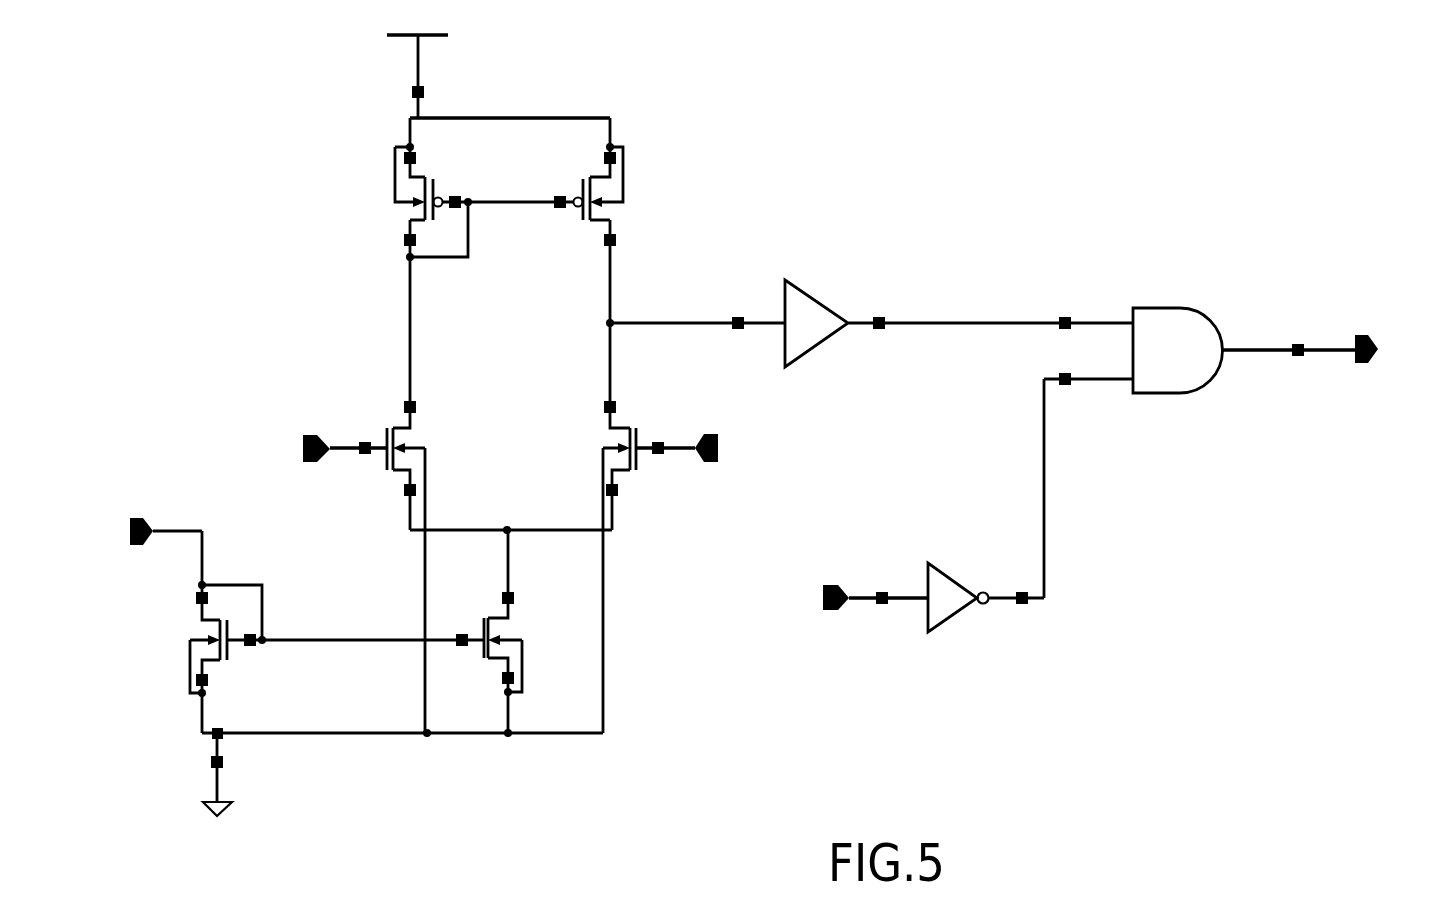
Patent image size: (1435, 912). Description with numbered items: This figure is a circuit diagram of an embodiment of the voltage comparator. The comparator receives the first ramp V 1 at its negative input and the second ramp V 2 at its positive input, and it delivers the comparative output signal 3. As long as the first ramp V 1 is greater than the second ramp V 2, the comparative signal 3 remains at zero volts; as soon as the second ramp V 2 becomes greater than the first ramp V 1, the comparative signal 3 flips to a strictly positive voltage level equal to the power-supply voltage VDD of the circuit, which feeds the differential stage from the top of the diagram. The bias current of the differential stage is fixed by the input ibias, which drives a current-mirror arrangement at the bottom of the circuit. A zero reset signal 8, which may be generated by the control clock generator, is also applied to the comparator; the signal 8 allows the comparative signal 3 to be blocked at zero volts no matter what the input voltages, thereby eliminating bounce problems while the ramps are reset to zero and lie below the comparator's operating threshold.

The comparative output signal 3 is at (1377, 344).
The zero reset signal 8 is at (823, 607).
The first ramp 1 is at (303, 449).
The second ramp 2 is at (718, 450).
The power-supply voltage VDD is at (479, 118).
The bias current input ibias is at (135, 531).